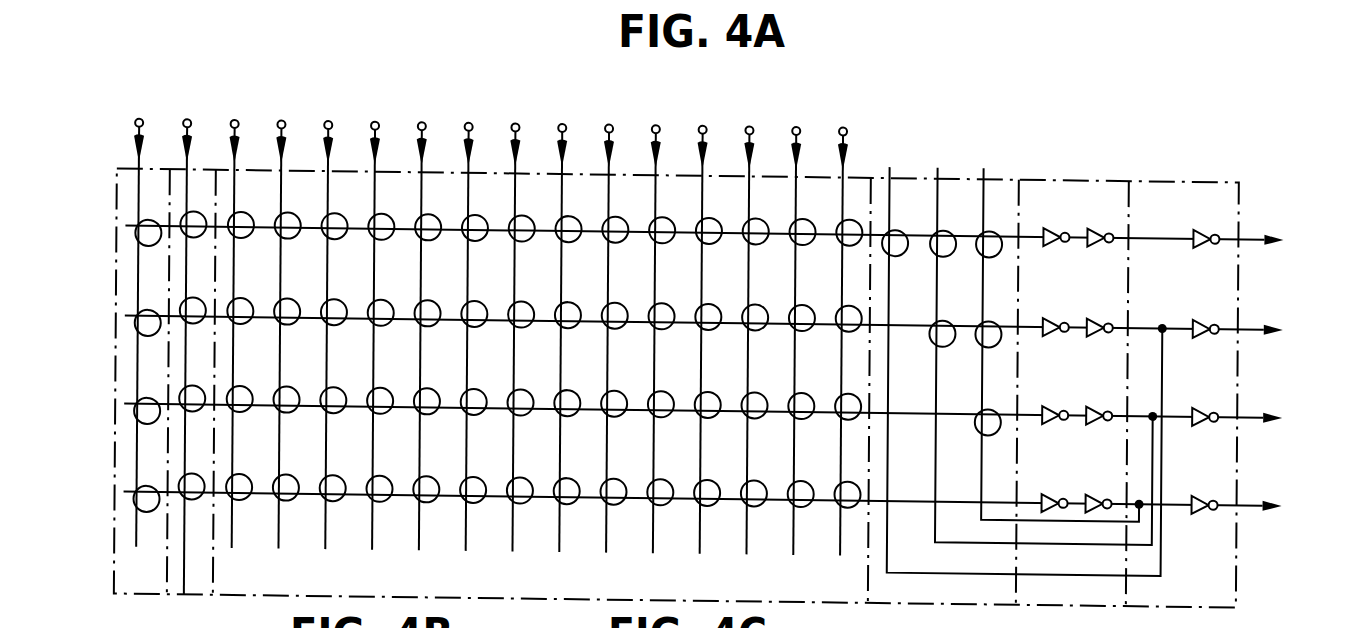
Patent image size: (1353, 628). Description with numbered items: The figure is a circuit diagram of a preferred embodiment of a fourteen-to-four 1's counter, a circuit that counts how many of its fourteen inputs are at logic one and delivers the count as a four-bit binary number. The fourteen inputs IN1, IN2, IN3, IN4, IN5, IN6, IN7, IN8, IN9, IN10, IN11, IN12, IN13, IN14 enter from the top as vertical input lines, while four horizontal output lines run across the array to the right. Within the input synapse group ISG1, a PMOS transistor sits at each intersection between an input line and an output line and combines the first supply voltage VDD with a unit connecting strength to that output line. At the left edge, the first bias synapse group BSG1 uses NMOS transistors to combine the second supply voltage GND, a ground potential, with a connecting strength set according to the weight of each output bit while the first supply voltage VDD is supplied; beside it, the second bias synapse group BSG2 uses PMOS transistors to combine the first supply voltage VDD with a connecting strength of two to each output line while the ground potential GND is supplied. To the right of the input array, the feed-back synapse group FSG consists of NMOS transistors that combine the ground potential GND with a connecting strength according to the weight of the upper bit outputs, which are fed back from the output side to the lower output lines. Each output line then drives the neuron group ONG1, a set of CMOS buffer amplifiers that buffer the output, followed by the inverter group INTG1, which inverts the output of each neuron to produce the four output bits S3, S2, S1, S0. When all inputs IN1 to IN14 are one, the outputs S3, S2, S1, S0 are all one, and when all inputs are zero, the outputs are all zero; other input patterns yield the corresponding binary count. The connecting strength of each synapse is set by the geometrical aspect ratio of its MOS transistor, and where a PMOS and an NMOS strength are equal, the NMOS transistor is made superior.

The first bias synapse group BSG1 is at (95, 319).
The second bias synapse group BSG2 is at (177, 347).
The input synapse group ISG1 is at (541, 348).
The feed-back synapse group FSG is at (977, 580).
The neuron group ONG1 is at (1043, 177).
The inverter group INTG1 is at (1164, 181).
The first supply voltage VDD is at (128, 205).
The second supply voltage GND is at (210, 611).
The input IN1 is at (237, 321).
The input IN2 is at (283, 308).
The input IN3 is at (330, 322).
The input IN4 is at (377, 309).
The input IN5 is at (424, 323).
The input IN6 is at (471, 311).
The input IN7 is at (517, 324).
The input IN8 is at (564, 312).
The input IN9 is at (612, 325).
The input IN10 is at (662, 314).
The input IN11 is at (705, 327).
The input IN12 is at (749, 315).
The input IN13 is at (797, 329).
The input IN14 is at (843, 316).
The output S0 is at (723, 234).
The output S1 is at (723, 324).
The output S2 is at (722, 412).
The output S3 is at (721, 500).